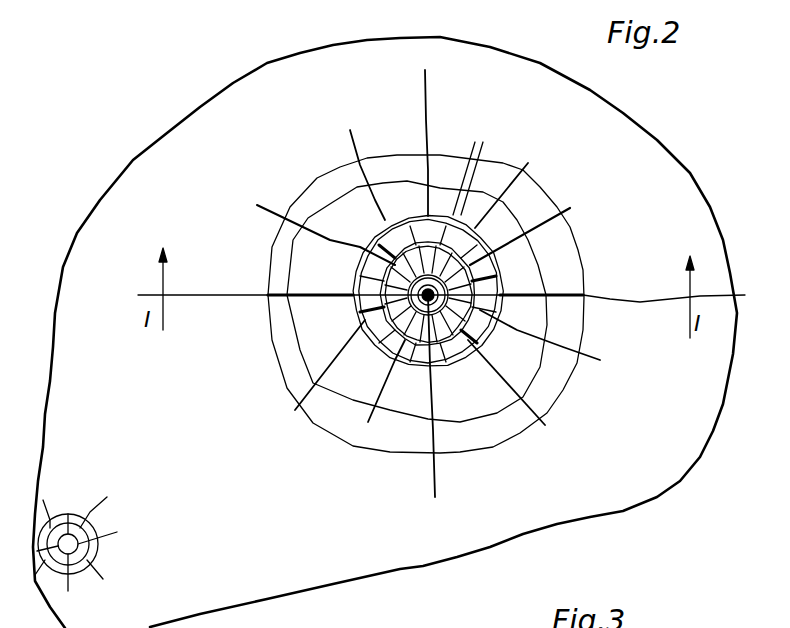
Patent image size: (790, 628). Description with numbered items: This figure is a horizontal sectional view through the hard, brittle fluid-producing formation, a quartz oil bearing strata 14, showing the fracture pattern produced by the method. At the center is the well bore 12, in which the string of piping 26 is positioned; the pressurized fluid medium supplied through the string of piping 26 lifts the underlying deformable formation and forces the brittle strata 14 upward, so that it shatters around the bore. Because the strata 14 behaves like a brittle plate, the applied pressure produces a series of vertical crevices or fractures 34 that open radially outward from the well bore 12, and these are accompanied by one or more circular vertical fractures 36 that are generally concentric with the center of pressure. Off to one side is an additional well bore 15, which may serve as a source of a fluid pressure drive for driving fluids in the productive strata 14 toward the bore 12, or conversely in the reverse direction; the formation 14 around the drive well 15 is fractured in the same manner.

The well bore 12 is at (409, 372).
The quartz oil bearing strata 14 is at (583, 102).
The well bores 15 is at (68, 514).
The string of piping 26 is at (473, 288).
The vertical crevices or fractures 34 is at (345, 246).
The circular vertical fractures 36 is at (475, 142).